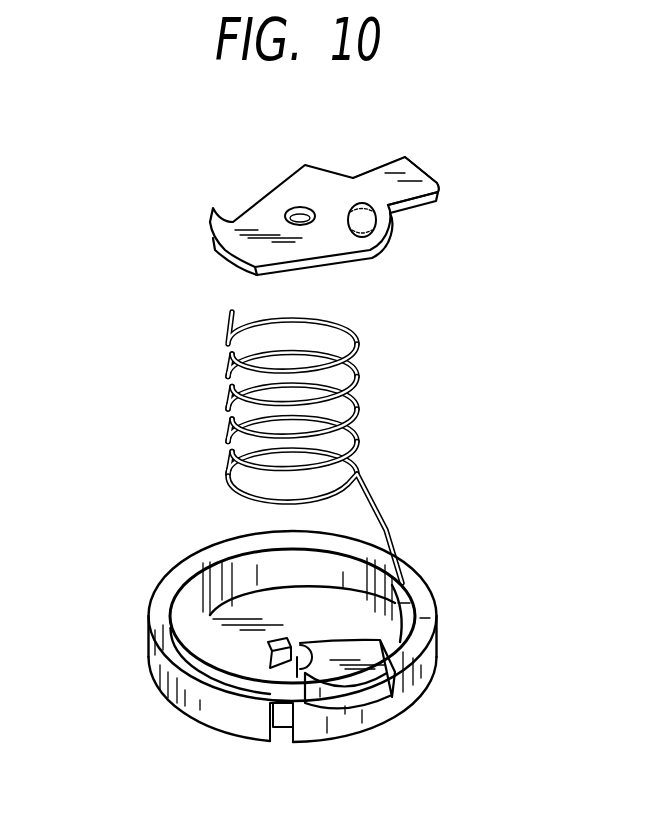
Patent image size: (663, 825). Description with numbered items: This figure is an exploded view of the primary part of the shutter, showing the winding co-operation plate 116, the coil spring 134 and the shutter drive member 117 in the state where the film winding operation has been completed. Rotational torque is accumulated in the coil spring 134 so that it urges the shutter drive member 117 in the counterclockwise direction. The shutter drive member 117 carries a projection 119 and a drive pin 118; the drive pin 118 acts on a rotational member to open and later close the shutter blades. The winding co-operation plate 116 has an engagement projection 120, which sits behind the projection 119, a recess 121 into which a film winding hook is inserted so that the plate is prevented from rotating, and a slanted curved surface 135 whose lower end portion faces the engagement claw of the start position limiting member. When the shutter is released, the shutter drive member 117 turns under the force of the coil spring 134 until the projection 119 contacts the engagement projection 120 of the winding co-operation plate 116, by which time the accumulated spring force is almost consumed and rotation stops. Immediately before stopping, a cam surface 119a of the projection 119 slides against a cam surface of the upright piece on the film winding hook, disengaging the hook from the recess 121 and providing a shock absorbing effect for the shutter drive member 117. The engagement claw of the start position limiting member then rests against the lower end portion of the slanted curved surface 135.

The winding co-operation plate 116 is at (153, 647).
The shutter drive member 117 is at (391, 247).
The drive pin 118 is at (354, 208).
The projection 119 is at (380, 167).
The cam surface 119a is at (427, 174).
The engagement projection 120 is at (284, 648).
The recess 121 is at (283, 742).
The coil spring 134 is at (356, 400).
The slanted curved surface 135 is at (357, 696).